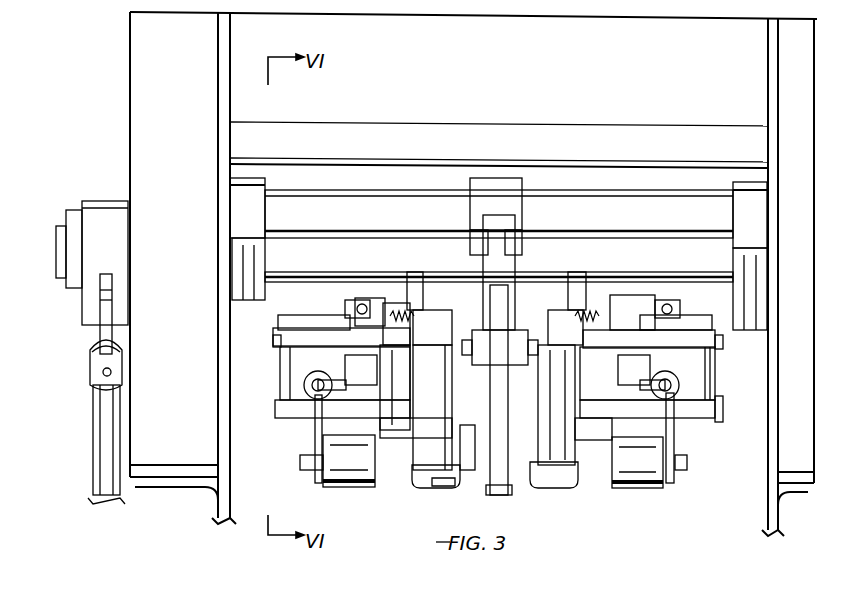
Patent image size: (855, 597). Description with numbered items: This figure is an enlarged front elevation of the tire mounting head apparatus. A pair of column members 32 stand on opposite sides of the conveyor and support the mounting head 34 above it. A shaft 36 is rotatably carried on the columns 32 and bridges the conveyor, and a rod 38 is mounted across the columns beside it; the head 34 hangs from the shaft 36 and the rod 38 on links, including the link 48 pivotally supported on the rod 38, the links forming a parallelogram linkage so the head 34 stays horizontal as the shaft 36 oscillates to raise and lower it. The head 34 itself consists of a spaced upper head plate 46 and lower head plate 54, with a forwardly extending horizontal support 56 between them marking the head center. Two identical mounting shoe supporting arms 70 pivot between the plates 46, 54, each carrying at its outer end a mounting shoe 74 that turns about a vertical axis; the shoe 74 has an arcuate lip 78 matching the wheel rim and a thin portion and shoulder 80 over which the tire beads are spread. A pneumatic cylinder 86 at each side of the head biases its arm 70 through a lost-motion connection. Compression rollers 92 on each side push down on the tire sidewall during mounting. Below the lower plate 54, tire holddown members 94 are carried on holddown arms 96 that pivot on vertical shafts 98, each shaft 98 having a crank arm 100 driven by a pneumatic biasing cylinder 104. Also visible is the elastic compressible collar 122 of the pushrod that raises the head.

The column member 32 is at (145, 107).
The mounting head 34 is at (658, 518).
The shaft 36 is at (678, 276).
The rod 38 is at (672, 231).
The upper head plate 46 is at (275, 342).
The link 48 is at (500, 252).
The lower head plate 54 is at (275, 410).
The support 56 is at (478, 378).
The mounting shoe supporting arm 70 is at (408, 387).
The mounting shoe 74 is at (432, 482).
The lip 78 is at (440, 486).
The shoulder 80 is at (463, 476).
The pneumatic cylinder 86 is at (310, 396).
The compression roller 92 is at (350, 488).
The tire holddown member 94 is at (463, 440).
The holddown arm 96 is at (388, 430).
The shaft 98 is at (711, 375).
The crank arm 100 is at (314, 320).
The pneumatic biasing cylinder 104 is at (355, 297).
The elastic compressible collar 122 is at (90, 370).